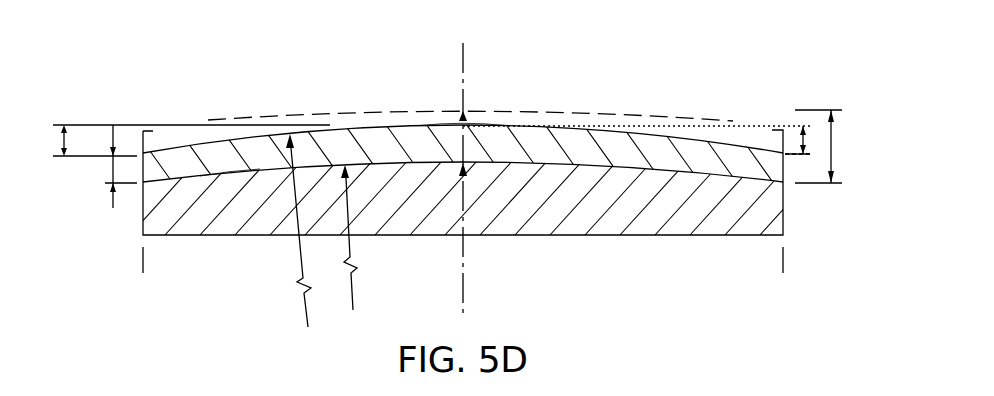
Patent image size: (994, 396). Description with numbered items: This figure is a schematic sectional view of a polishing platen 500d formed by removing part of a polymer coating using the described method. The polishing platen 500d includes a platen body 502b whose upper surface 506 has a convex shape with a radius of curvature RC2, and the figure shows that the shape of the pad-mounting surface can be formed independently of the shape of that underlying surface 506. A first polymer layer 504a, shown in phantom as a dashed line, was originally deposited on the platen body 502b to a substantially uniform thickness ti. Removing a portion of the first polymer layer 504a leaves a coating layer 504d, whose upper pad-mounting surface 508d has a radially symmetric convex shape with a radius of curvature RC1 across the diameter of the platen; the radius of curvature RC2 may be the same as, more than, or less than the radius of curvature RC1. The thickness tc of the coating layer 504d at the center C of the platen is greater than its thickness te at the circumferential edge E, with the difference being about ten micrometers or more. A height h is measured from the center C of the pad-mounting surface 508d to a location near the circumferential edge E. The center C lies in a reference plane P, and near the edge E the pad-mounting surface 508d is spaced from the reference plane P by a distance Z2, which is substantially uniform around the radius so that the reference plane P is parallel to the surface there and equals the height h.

The polishing platen 500d is at (789, 68).
The platen body 502b is at (632, 212).
The first polymer layer 504a is at (304, 112).
The coating layer 504d is at (635, 147).
The surface of the platen body 506 is at (228, 172).
The pad-mounting surface 508d is at (585, 128).
The height h is at (186, 140).
The edge thickness of the coating layer te is at (107, 166).
The center thickness of the coating layer tc is at (465, 142).
The thickness of the first polymer layer ti is at (826, 146).
The distance from the reference plane Z2 is at (804, 141).
The reference plane P is at (780, 126).
The circumferential edge E is at (143, 258).
The center C is at (464, 311).
The radius of curvature of the pad-mounting surface RC1 is at (302, 312).
The radius of curvature of the platen body surface RC2 is at (355, 292).